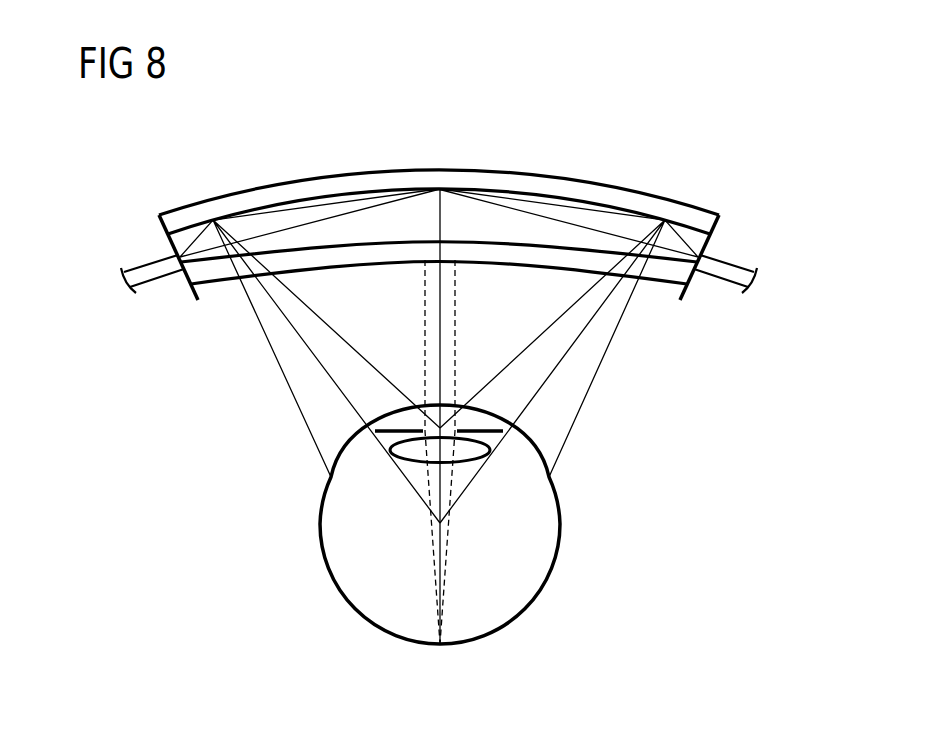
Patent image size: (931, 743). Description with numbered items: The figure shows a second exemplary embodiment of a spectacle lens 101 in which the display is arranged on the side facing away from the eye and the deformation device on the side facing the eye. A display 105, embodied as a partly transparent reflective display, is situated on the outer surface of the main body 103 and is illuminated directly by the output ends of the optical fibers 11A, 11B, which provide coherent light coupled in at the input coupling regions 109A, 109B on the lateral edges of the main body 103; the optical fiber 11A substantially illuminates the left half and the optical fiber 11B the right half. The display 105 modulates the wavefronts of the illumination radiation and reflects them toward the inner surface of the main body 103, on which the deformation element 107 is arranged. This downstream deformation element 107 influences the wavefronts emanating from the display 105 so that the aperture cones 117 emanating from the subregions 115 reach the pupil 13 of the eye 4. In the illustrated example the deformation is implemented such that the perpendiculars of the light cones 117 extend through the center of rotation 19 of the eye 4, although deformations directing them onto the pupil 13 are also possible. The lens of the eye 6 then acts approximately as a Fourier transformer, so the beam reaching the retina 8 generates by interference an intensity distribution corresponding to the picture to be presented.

The spectacle lens 101 is at (439, 212).
The display 105 is at (493, 175).
The main body 103 is at (622, 220).
The deformation device 107 is at (500, 252).
The subregions 115 is at (205, 189).
The optical fiber 11A is at (157, 270).
The optical fiber 11B is at (721, 270).
The input coupling region 109A is at (176, 282).
The input coupling region 109B is at (702, 282).
The light cones 117 is at (297, 383).
The pupil 13 is at (445, 424).
The lens of the eye 6 is at (483, 452).
The eye 4 is at (550, 522).
The retina 8 is at (533, 598).
The center of rotation of the eye 19 is at (440, 523).